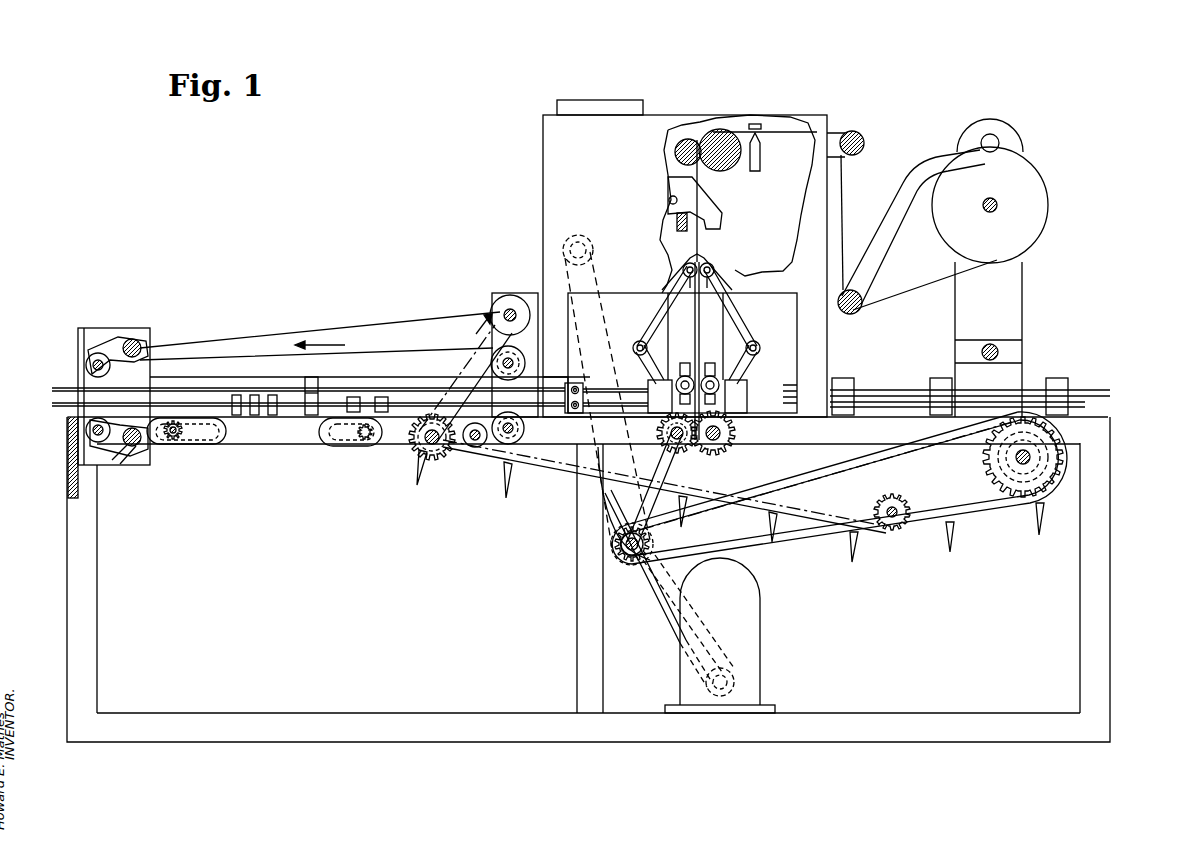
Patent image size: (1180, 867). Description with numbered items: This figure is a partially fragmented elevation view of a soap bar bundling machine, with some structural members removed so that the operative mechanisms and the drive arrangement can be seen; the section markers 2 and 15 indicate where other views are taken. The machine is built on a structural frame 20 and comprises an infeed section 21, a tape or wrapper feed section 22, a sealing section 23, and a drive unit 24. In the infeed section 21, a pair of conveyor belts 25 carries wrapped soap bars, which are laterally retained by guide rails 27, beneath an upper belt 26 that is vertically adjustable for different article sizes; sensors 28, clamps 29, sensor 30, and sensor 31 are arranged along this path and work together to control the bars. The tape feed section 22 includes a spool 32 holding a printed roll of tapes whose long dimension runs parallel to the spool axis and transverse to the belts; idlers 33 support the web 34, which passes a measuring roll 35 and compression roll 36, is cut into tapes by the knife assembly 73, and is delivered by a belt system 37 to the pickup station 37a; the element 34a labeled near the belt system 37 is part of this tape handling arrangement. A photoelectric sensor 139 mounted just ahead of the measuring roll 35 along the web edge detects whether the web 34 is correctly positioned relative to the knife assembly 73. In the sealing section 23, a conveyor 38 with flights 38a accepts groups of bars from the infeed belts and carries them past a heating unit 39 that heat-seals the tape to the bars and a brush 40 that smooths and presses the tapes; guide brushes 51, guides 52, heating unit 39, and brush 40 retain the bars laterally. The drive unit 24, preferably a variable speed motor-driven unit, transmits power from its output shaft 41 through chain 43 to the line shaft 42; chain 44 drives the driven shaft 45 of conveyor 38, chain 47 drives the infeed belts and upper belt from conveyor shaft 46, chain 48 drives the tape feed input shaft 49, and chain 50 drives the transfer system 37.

The section line 2- 2 is at (67, 380).
The section line 15- 15 is at (780, 360).
The structural frame 20 is at (90, 640).
The infeed section 21 is at (256, 256).
The tape feed section 22 is at (779, 62).
The sealing section 23 is at (882, 356).
The drive unit 24 is at (761, 655).
The conveyor belts 25 is at (147, 432).
The upper belt 26 is at (208, 352).
The guide rails 27 is at (60, 406).
The sensors 28 is at (237, 416).
The clamps 29 is at (311, 416).
The sensor 30 is at (353, 412).
The sensor 31 is at (381, 414).
The spool 32 is at (1023, 170).
The idlers 33 is at (866, 131).
The web 34 is at (942, 278).
The arm assembly 34a is at (700, 320).
The measuring roll 35 is at (713, 128).
The compression roll 36 is at (688, 138).
The belt system 37 is at (628, 320).
The pickup station 37a is at (698, 415).
The conveyor 38 is at (786, 495).
The flights 38a is at (926, 528).
The heating unit 39 is at (760, 415).
The brush 40 is at (1033, 398).
The output shaft 41 is at (735, 688).
The line shaft 42 is at (617, 552).
The chain 43 is at (650, 603).
The chain 44 is at (737, 537).
The driven shaft 45 is at (1030, 462).
The shaft 46 is at (440, 447).
The chain 47 is at (498, 312).
The chain 48 is at (612, 532).
The input shaft 49 is at (557, 247).
The chain 50 is at (676, 472).
The guide brushes 51 is at (583, 418).
The guides 52 is at (660, 390).
The knife assembly 73 is at (745, 222).
The photoelectric sensor 139 is at (777, 147).